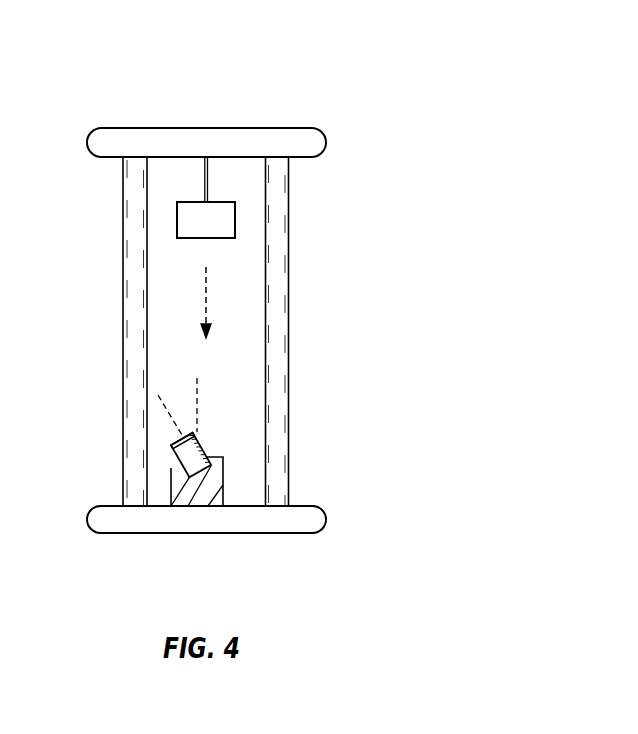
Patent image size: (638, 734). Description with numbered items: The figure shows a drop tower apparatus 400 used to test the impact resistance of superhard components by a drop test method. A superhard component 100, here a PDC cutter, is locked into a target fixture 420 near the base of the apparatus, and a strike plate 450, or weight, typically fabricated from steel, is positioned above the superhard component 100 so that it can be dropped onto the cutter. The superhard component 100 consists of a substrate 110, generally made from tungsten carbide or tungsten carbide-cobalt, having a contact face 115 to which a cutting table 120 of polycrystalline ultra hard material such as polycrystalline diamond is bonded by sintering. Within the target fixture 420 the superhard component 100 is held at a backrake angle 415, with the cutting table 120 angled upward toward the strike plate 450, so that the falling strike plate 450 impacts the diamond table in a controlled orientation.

The drop tower apparatus 400 is at (398, 80).
The strike plate 450 is at (235, 210).
The backrake angle 415 is at (196, 408).
The superhard component 100 is at (221, 438).
The contact face 115 is at (181, 459).
The cutting table 120 is at (172, 446).
The target fixture 420 is at (217, 478).
The substrate 110 is at (195, 465).